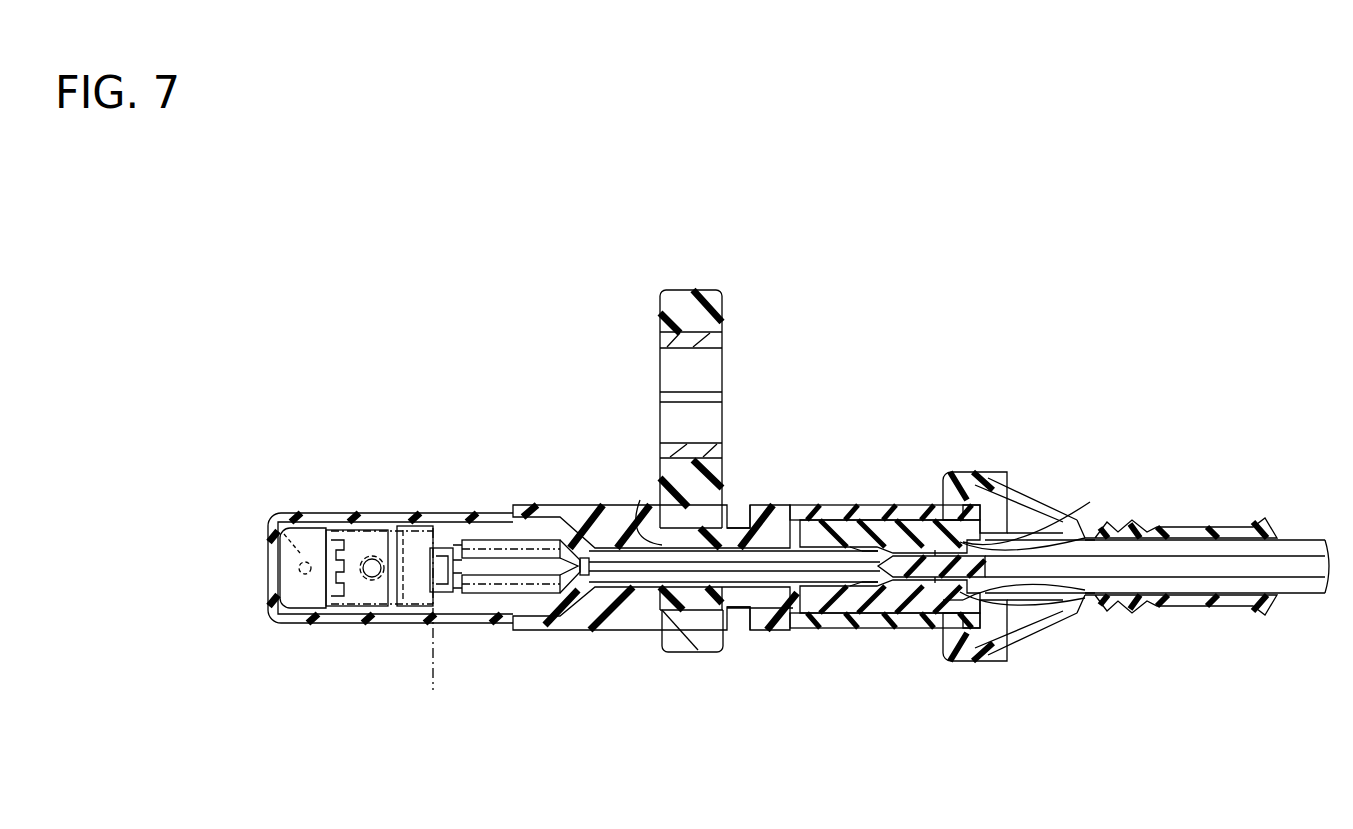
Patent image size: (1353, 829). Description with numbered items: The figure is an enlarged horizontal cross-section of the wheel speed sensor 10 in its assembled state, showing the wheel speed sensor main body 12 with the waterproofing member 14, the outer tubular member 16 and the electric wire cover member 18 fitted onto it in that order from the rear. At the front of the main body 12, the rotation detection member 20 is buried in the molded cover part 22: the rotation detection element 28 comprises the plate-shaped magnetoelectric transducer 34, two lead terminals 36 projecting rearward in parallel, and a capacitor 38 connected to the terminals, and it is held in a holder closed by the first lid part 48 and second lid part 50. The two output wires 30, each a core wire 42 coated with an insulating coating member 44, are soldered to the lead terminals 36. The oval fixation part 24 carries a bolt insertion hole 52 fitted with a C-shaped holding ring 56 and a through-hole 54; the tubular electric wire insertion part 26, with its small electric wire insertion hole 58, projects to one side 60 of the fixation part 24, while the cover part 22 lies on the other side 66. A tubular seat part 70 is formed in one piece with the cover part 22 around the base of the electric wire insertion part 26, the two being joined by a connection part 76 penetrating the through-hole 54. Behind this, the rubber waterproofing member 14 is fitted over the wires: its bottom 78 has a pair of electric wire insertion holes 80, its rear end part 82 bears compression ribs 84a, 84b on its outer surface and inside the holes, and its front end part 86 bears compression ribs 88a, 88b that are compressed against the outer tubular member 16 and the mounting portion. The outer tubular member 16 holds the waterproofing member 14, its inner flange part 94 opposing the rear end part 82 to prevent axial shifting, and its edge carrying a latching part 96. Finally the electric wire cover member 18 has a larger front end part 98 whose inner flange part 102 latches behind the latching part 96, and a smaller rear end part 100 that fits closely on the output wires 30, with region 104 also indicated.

The wheel speed sensor 10 is at (783, 172).
The wheel speed sensor main body 12 is at (730, 419).
The waterproofing member 14 is at (884, 495).
The outer tubular member 16 is at (800, 520).
The electric wire cover member 18 is at (1172, 475).
The rotation detection member 20 is at (526, 508).
The cover part 22 is at (610, 628).
The fixation part 24 is at (700, 312).
The electric wire insertion part 26 is at (876, 600).
The rotation detection element 28 is at (450, 500).
The output wires 30 is at (1295, 540).
The magnetoelectric transducer 34 is at (300, 557).
The lead terminals 36 is at (415, 540).
The capacitor 38 is at (434, 624).
The core wire 42 is at (478, 545).
The coating member 44 is at (563, 545).
The first lid part 48 is at (365, 590).
The second lid part 50 is at (452, 600).
The bolt insertion hole 52 is at (696, 348).
The through-hole 54 is at (639, 506).
The C-shaped holding ring 56 is at (690, 455).
The electric wire insertion hole 58 is at (728, 612).
The one side 60 is at (803, 420).
The other side 66 is at (545, 410).
The tubular seat part 70 is at (753, 520).
The connection part 76 is at (693, 596).
The bottom 78 is at (1032, 517).
The electric wire insertion holes 80 is at (1095, 540).
The rear end part 82 is at (962, 478).
The compression rib 84a is at (918, 592).
The compression rib 84b is at (917, 590).
The front end part 86 is at (855, 465).
The compression rib 88a is at (850, 597).
The compression rib 88b is at (852, 600).
The inner flange part 94 is at (985, 610).
The latching part 96 is at (990, 518).
The front end part 98 is at (1016, 435).
The rear end part 100 is at (1245, 500).
The inner flange part 102 is at (950, 640).
The seal section 104 is at (770, 375).